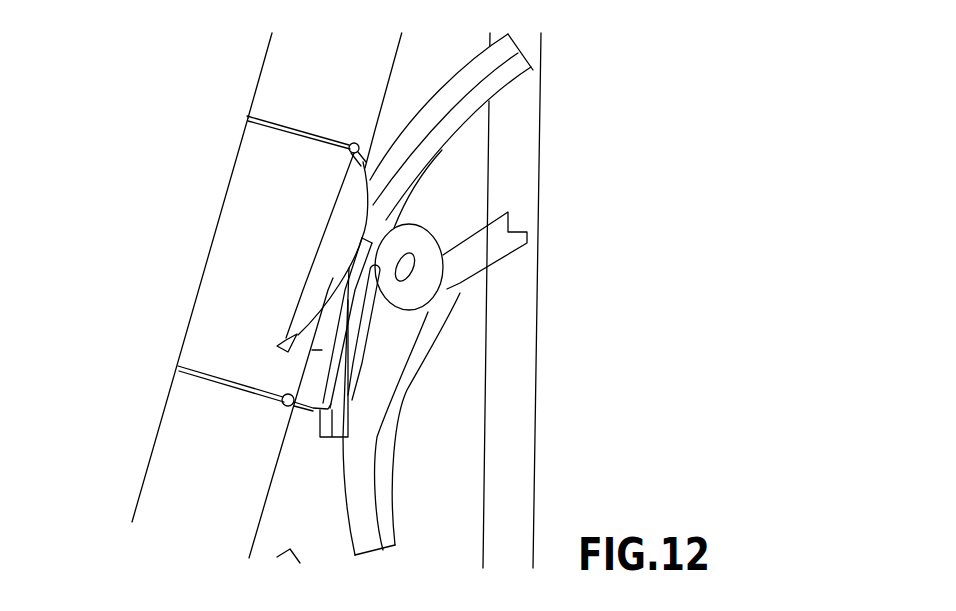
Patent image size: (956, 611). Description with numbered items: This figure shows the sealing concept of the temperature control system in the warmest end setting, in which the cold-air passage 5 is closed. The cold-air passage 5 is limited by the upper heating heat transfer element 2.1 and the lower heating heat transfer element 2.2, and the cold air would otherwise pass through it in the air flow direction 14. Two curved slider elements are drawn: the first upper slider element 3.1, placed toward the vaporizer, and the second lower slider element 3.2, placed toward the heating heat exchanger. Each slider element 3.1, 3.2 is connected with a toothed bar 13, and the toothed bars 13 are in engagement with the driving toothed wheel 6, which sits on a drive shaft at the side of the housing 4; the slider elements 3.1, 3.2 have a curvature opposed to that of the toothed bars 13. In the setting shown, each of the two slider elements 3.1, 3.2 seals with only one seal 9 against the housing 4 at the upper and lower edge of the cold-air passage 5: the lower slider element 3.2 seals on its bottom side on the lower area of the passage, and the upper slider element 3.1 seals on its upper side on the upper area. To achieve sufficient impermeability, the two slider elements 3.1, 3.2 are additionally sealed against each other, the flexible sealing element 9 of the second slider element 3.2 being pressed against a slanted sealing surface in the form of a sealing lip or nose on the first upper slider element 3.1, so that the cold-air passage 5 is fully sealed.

The upper heating heat transfer element 2.1 is at (312, 78).
The lower heating heat transfer element 2.2 is at (186, 462).
The housing 4 is at (278, 463).
The cold air passage 5 is at (255, 207).
The seal 9 is at (333, 166).
The toothed bar 13 is at (524, 79).
The first upper slider element 3.1 is at (392, 188).
The second lower slider element 3.2 is at (368, 381).
The driving toothed wheel 6 is at (452, 266).
The air flow direction 14 is at (578, 332).